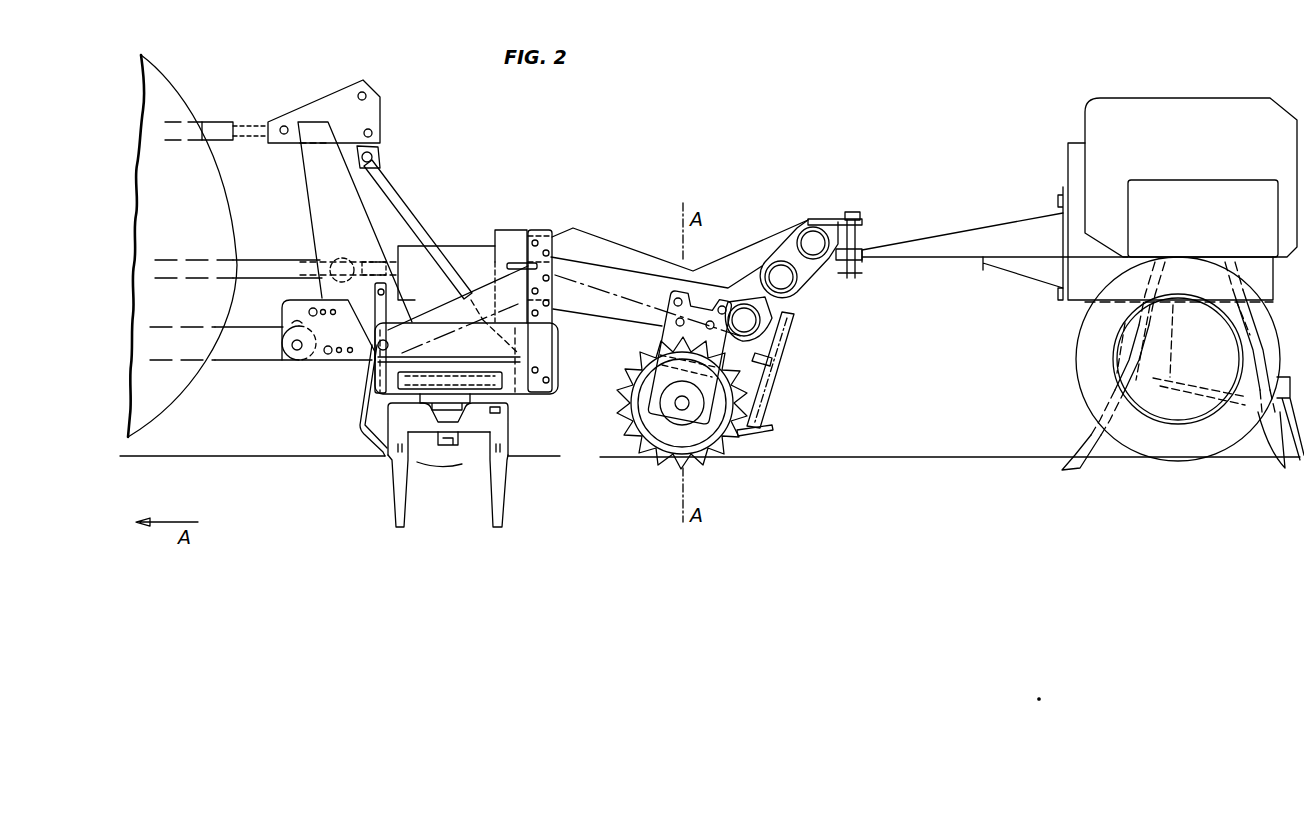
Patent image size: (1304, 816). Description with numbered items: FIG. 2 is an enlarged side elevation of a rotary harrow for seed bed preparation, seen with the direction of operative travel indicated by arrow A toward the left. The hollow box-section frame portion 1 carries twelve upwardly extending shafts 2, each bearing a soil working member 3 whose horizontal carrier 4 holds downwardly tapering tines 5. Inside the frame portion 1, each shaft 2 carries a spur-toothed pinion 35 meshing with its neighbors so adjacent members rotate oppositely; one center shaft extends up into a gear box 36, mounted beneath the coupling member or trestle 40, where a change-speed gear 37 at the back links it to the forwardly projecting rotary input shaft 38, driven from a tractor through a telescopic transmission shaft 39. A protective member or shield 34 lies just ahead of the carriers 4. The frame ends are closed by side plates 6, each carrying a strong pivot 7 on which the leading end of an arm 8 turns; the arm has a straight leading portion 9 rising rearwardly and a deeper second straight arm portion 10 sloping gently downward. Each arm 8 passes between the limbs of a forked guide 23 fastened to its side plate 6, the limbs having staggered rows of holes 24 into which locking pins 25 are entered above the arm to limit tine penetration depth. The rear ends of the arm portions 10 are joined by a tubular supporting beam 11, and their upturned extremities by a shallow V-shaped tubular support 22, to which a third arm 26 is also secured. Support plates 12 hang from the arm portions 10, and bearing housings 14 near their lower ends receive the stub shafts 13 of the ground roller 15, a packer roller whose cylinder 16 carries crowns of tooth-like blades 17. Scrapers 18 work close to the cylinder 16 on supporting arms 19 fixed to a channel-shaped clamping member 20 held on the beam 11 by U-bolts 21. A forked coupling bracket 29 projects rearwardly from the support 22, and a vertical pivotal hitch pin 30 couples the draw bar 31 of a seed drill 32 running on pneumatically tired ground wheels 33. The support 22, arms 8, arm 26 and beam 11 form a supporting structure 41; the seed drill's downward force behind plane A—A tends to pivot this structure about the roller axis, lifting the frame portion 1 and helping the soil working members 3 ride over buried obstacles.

The hollow box-section frame portion 1 is at (515, 397).
The shafts 2 is at (450, 381).
The soil working member 3 is at (448, 524).
The carrier 4 is at (455, 462).
The tines 5 is at (394, 502).
The side plates 6 is at (548, 397).
The pivot 7 is at (378, 345).
The arm 8 is at (599, 320).
The straight leading portion 9 is at (438, 310).
The second straight arm portion 10 is at (628, 318).
The tubular supporting beam 11 is at (780, 334).
The support plates 12 is at (660, 390).
The stub shafts 13 is at (672, 403).
The bearing housings 14 is at (672, 415).
The ground roller 15 is at (660, 466).
The cylinder 16 is at (708, 468).
The tooth-like blades 17 is at (740, 452).
The scrapers 18 is at (772, 430).
The supporting arms 19 is at (775, 398).
The clamping member 20 is at (773, 360).
The U-bolts 21 is at (790, 315).
The tubular support 22 is at (818, 278).
The guides 23 is at (545, 228).
The holes 24 is at (580, 252).
The locking pins 25 is at (515, 262).
The third arm 26 is at (640, 238).
The forked coupling bracket 29 is at (815, 225).
The pivotal hitch pin 30 is at (858, 212).
The draw bar 31 is at (870, 250).
The seed drill 32 is at (1085, 128).
The ground wheels 33 is at (1085, 388).
The protective member or shield 34 is at (378, 460).
The pinion 35 is at (378, 392).
The gear box 36 is at (450, 244).
The change-speed gear 37 is at (496, 232).
The rotary input shaft 38 is at (366, 262).
The telescopic transmission shaft 39 is at (286, 270).
The coupling member or trestle 40 is at (303, 185).
The supporting structure 41 is at (748, 229).